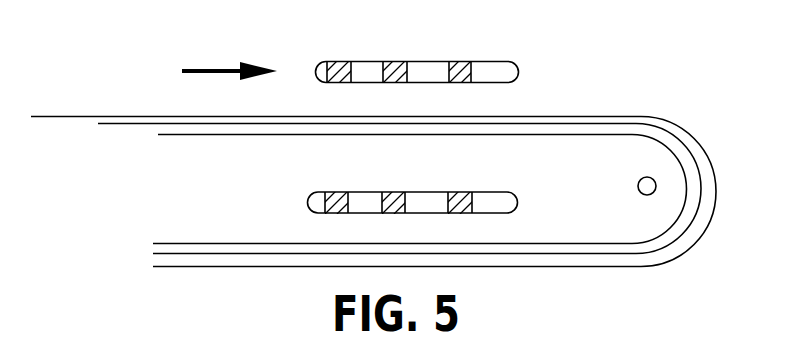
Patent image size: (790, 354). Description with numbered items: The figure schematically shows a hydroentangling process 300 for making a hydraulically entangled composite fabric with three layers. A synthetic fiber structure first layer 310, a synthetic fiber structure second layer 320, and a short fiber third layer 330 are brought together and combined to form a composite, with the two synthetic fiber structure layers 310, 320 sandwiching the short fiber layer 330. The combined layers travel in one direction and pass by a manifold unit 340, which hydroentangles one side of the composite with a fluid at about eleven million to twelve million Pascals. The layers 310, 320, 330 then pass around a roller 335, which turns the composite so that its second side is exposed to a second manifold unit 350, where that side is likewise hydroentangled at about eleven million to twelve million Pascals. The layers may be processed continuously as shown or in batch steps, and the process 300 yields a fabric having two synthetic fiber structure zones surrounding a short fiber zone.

The hydroentangling process 300 is at (549, 27).
The synthetic fiber structure first layer 310 is at (62, 117).
The synthetic fiber structure second layer 320 is at (222, 135).
The short fiber third layer 330 is at (128, 124).
The roller 335 is at (640, 191).
The manifold unit 340 is at (519, 70).
The manifold unit 350 is at (502, 197).